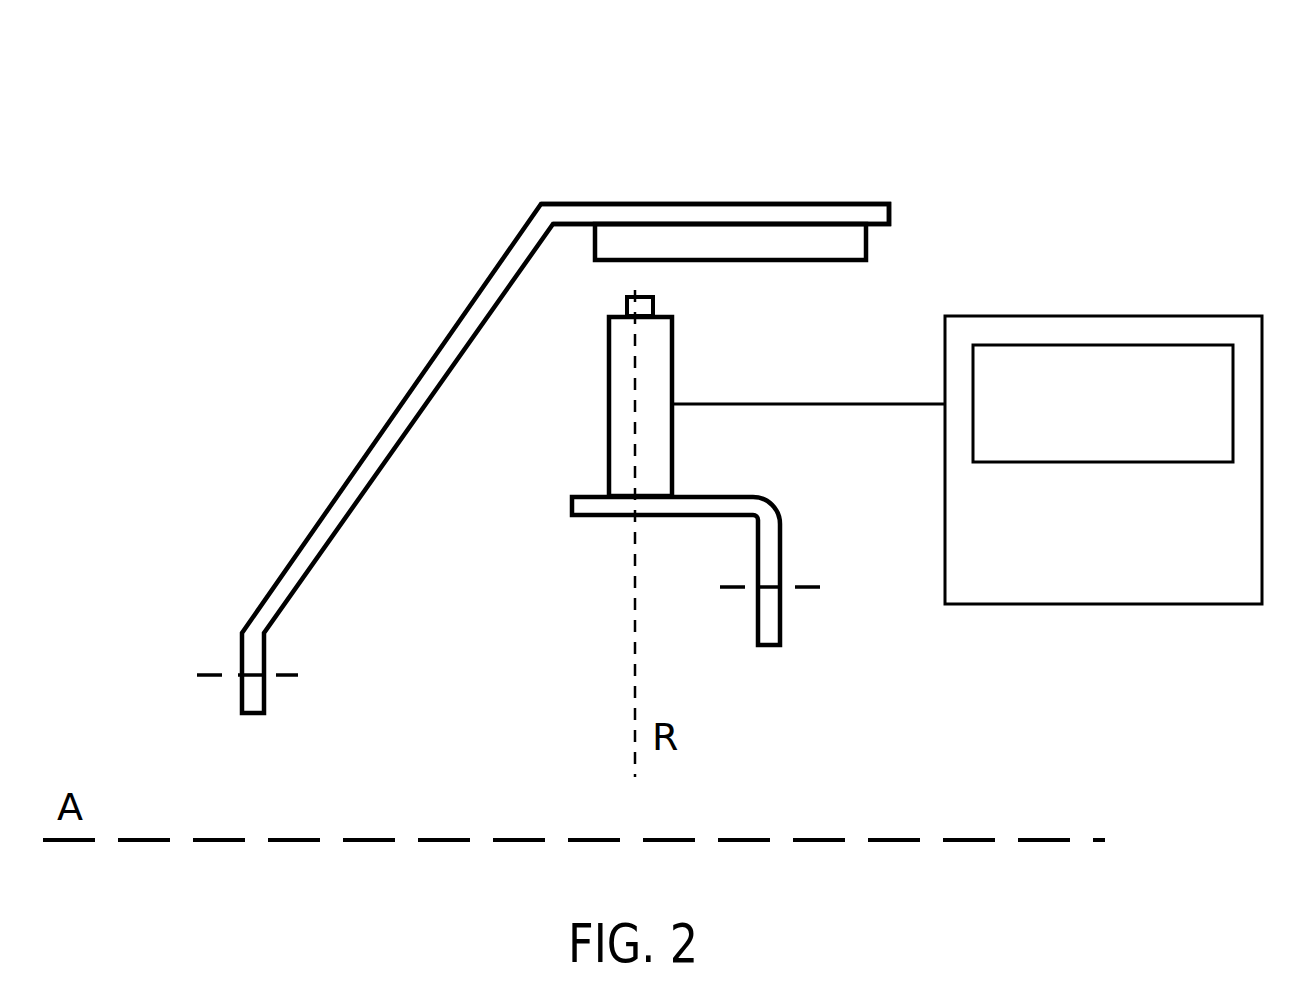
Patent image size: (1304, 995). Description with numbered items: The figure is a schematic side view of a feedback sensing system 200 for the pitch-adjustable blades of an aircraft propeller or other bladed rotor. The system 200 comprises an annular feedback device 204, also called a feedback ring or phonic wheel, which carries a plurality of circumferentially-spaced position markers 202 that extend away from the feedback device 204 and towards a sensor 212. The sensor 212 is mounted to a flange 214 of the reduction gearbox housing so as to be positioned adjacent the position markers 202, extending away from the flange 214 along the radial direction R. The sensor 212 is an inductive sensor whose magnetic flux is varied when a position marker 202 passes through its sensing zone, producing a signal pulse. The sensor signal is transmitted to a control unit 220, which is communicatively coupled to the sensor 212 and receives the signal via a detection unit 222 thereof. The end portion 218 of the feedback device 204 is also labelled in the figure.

The feedback sensing system 200 is at (276, 172).
The position markers 202 is at (706, 242).
The feedback device 204 is at (260, 597).
The sensor 212 is at (605, 386).
The flange 214 is at (572, 510).
The top plate end 218 is at (878, 232).
The control unit 220 is at (1133, 589).
The detection unit 222 is at (1133, 439).